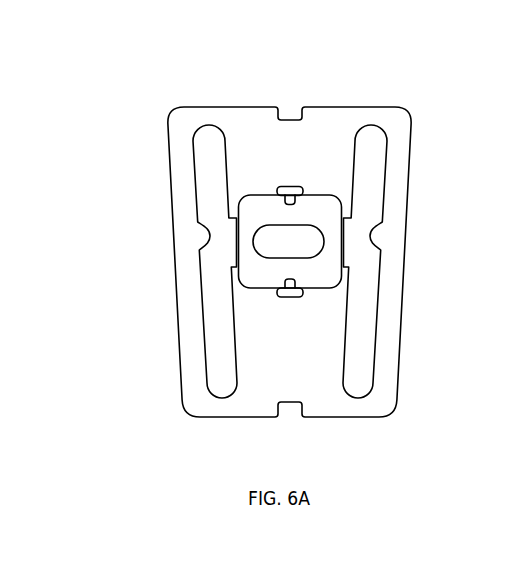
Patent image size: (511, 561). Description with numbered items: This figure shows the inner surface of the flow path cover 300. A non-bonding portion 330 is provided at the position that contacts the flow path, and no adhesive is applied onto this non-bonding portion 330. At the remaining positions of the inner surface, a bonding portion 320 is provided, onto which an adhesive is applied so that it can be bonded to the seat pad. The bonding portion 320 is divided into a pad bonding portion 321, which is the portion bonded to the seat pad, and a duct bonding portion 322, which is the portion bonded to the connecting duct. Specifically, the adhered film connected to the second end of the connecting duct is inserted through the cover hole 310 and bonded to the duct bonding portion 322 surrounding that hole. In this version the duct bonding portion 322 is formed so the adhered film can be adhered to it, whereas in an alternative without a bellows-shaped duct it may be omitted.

The flow path cover 300 is at (263, 226).
The cover hole 310 is at (293, 249).
The bonding portion 320 is at (263, 261).
The pad bonding portion 321 is at (186, 148).
The duct bonding portion 322 is at (287, 242).
The non-bonding portion 330 is at (370, 201).